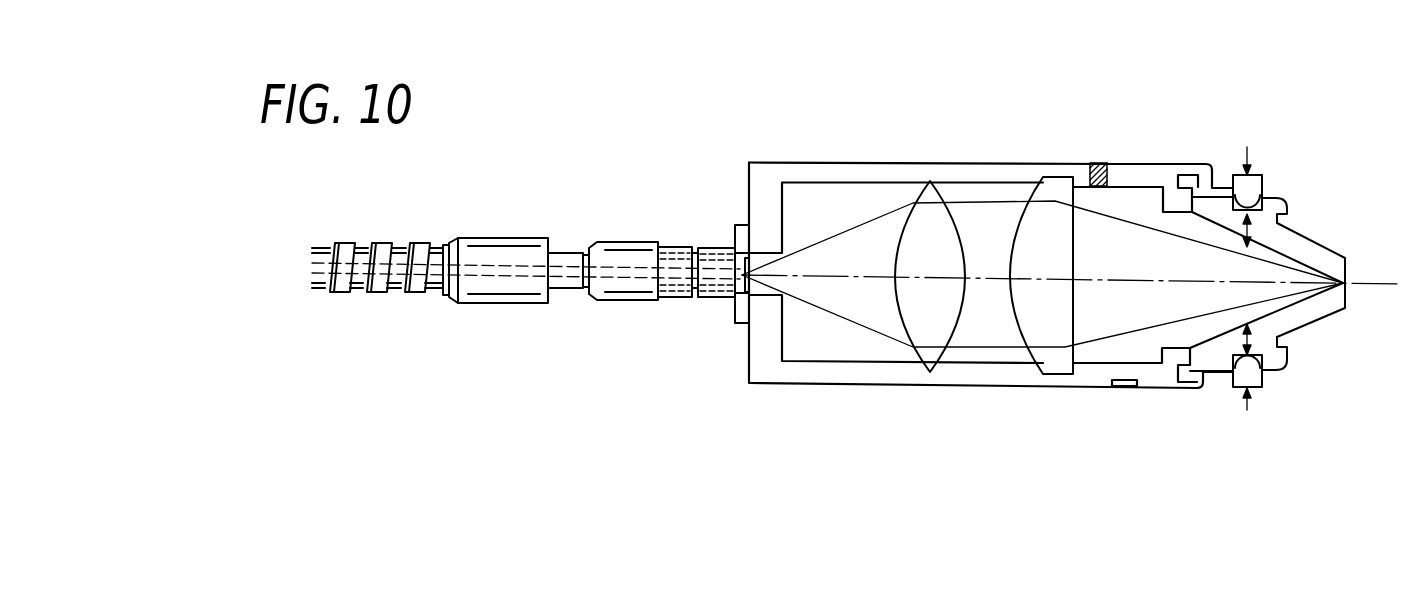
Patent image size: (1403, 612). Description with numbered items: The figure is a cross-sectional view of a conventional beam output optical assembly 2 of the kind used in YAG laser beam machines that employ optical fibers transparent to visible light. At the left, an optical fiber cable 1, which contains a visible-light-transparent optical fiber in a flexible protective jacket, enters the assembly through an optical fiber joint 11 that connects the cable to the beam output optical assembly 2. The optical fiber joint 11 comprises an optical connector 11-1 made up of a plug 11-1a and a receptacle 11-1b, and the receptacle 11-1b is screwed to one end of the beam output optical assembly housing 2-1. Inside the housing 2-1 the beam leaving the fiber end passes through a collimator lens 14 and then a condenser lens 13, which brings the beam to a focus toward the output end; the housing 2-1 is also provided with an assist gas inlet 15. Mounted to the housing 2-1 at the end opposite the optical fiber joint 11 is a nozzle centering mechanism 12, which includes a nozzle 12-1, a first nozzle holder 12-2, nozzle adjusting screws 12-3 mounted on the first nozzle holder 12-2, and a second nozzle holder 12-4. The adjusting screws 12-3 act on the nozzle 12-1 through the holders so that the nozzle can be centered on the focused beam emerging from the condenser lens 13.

The optical fiber cable 1 is at (389, 298).
The beam output optical assembly 2 is at (1071, 230).
The beam output optical assembly housing 2-1 is at (840, 372).
The optical fiber joint 11 is at (596, 213).
The optical connector 11-1 is at (532, 250).
The plug 11-1a is at (605, 245).
The receptacle 11-1b is at (735, 232).
The nozzle centering mechanism 12 is at (1246, 240).
The nozzle 12-1 is at (1298, 244).
The first nozzle holder 12-2 is at (1284, 198).
The nozzle adjusting screws 12-3 is at (1254, 183).
The second nozzle holder 12-4 is at (1190, 168).
The condenser lens 13 is at (1032, 215).
The collimator lens 14 is at (927, 212).
The assist gas inlet 15 is at (1096, 163).